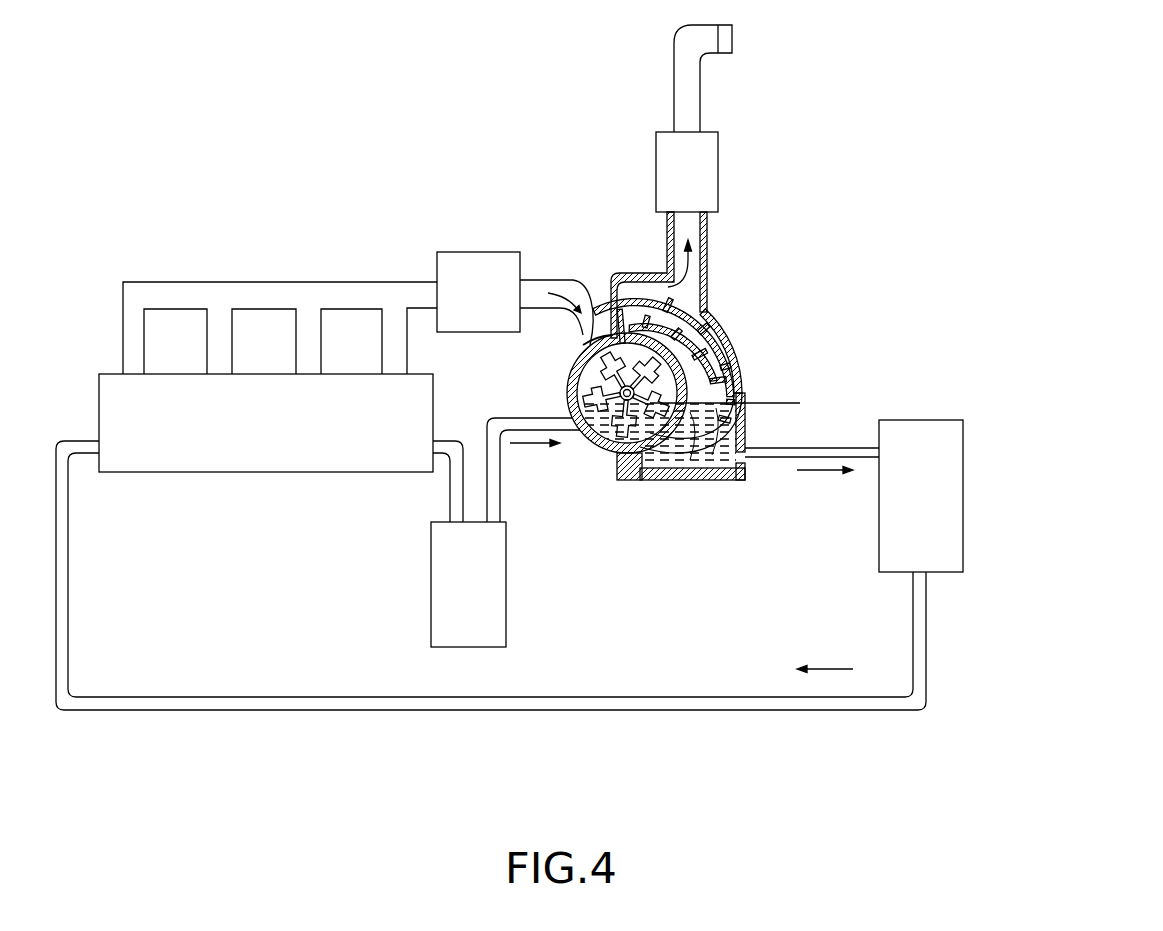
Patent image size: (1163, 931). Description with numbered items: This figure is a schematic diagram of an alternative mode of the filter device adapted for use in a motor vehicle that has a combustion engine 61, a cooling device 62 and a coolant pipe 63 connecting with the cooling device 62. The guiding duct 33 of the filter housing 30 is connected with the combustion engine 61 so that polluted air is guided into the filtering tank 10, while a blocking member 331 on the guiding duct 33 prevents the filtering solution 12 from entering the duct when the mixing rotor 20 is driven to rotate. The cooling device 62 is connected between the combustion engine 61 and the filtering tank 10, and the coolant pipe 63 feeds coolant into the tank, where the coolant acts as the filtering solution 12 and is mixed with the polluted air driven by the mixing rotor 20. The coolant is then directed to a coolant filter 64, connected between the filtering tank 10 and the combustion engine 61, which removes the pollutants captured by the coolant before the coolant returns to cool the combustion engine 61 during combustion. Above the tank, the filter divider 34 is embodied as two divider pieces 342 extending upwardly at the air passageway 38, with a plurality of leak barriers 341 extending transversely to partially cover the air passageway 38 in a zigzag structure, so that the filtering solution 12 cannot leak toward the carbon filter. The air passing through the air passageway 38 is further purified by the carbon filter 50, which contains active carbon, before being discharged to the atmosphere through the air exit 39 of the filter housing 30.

The filtering tank 10 is at (595, 455).
The filtering solution 12 is at (708, 458).
The mixing rotor 20 is at (582, 428).
The filter housing 30 is at (748, 432).
The guiding duct 33 is at (613, 333).
The blocking member 331 is at (586, 340).
The filter divider 34 is at (775, 376).
The leak barriers 341 is at (720, 327).
The divider pieces 342 is at (738, 332).
The air passageway 38 is at (663, 307).
The air exit 39 is at (742, 38).
The carbon filter 50 is at (690, 162).
The combustion engine 61 is at (178, 417).
The cooling device 62 is at (458, 597).
The coolant pipe 63 is at (522, 425).
The coolant filter 64 is at (925, 498).